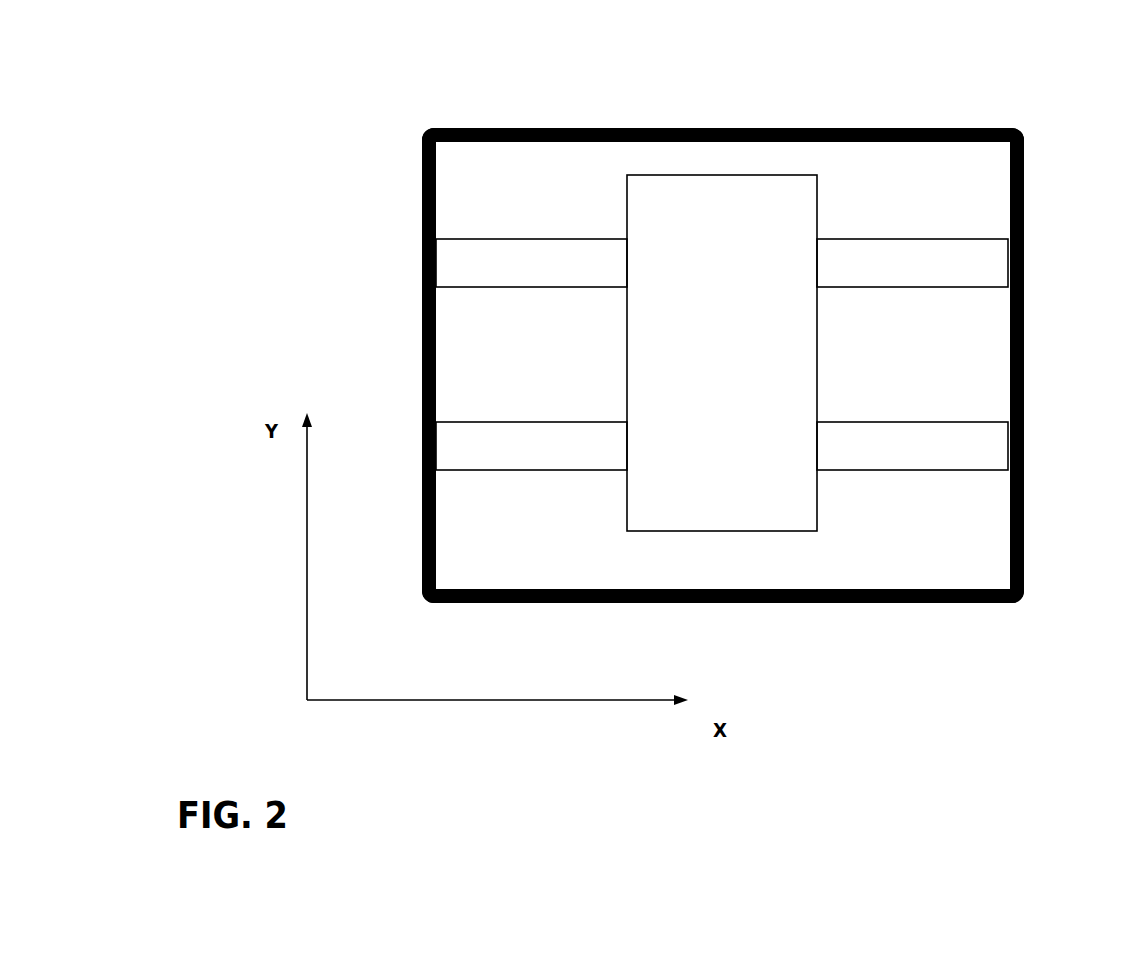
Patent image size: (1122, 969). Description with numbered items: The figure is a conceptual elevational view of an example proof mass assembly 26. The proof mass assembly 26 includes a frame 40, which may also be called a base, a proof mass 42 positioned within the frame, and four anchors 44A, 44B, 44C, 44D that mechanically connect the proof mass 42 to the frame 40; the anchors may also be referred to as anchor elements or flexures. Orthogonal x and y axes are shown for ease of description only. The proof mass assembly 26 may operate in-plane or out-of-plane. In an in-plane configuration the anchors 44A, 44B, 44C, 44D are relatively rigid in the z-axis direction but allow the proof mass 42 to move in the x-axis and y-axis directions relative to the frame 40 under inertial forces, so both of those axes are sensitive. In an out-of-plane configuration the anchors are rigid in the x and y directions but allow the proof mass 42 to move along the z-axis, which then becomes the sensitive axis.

The proof mass assembly 26 is at (843, 70).
The frame 40 is at (1037, 342).
The proof mass 42 is at (722, 353).
The anchor 44A is at (531, 263).
The anchor 44B is at (912, 263).
The anchor 44C is at (531, 446).
The anchor 44D is at (912, 446).